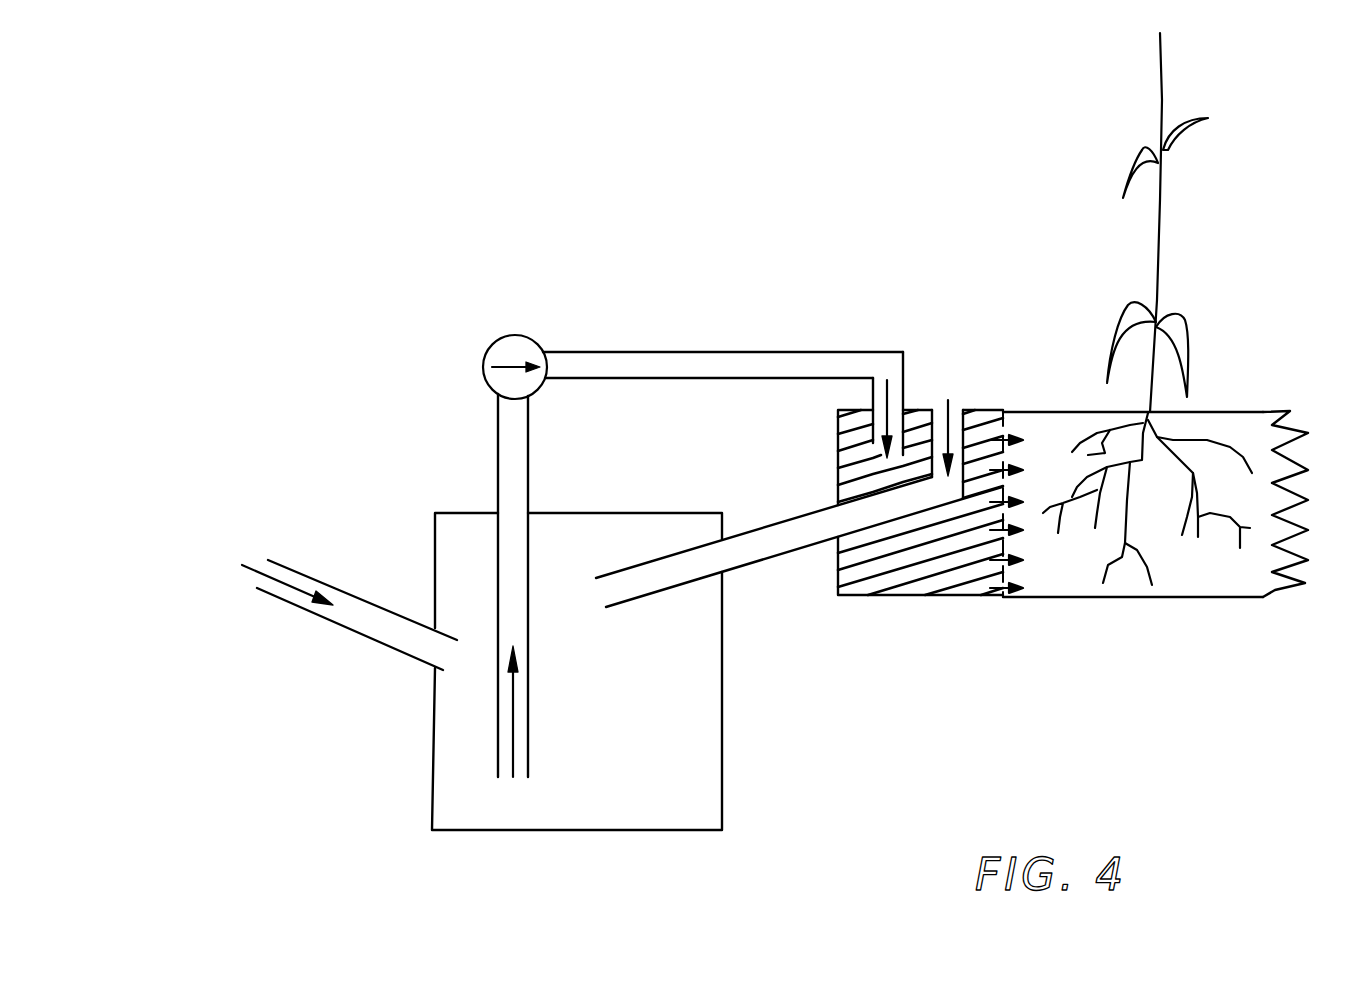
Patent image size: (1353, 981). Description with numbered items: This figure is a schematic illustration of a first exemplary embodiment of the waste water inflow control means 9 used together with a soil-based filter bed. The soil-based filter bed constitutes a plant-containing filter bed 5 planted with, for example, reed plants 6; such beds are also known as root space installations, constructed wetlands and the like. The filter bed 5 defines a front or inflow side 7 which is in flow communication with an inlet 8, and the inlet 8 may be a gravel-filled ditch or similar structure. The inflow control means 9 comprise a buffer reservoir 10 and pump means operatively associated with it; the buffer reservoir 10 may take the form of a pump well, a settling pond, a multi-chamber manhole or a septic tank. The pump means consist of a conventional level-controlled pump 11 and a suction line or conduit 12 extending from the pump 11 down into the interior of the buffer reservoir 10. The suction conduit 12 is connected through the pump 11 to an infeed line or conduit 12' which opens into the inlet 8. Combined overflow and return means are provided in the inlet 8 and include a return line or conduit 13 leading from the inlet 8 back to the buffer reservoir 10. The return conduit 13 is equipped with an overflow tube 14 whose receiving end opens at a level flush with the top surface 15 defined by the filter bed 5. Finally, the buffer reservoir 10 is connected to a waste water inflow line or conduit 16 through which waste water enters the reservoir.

The plant-containing filter bed 5 is at (1213, 418).
The reed plants 6 is at (1170, 232).
The front or inflow side 7 is at (992, 417).
The inlet 8 is at (938, 582).
The waste water inflow control means 9 is at (637, 328).
The buffer reservoir 10 is at (690, 762).
The pump 11 is at (497, 352).
The suction line or conduit 12 is at (556, 585).
The infeed line or conduit 12' is at (824, 360).
The return line or conduit 13 is at (797, 533).
The overflow tube 14 is at (962, 417).
The top surface 15 is at (1055, 408).
The waste water inflow line or conduit 16 is at (256, 582).